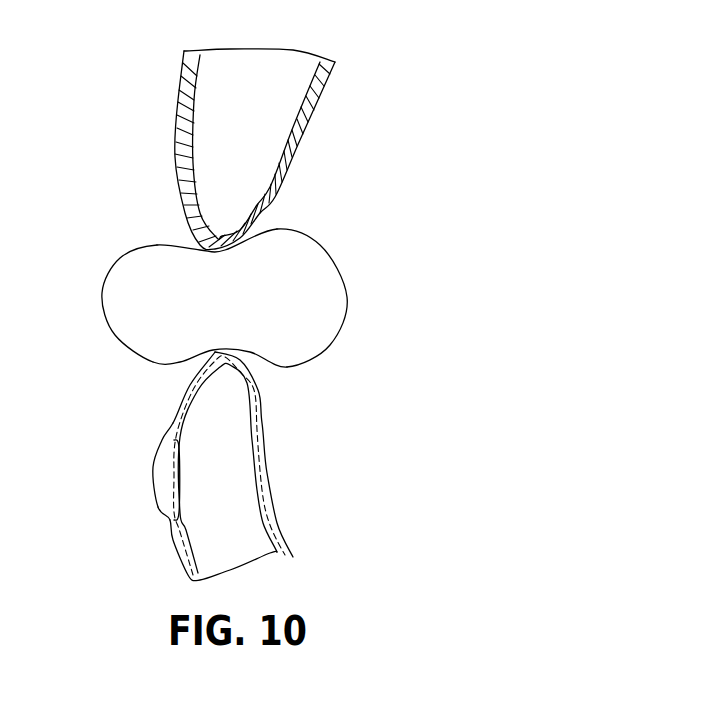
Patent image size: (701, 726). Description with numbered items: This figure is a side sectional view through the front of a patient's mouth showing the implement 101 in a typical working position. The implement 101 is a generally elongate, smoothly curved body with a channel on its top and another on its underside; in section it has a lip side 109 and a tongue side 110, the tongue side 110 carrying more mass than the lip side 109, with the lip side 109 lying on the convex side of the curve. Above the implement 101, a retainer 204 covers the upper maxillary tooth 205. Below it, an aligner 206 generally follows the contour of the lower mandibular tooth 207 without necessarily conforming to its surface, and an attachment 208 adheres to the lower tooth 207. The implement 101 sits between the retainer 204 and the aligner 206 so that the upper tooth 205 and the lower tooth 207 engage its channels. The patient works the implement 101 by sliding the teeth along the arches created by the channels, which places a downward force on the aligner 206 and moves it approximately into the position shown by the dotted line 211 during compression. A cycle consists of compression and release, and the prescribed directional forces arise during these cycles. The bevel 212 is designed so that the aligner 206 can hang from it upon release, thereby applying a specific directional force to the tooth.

The implement 101 is at (258, 267).
The lip side 109 is at (102, 307).
The tongue side 110 is at (340, 333).
The retainer 204 is at (293, 155).
The upper tooth 205 is at (256, 147).
The aligner 206 is at (221, 474).
The lower tooth 207 is at (227, 468).
The attachment 208 is at (177, 480).
The dotted line 211 is at (265, 462).
The bevel 212 is at (168, 522).